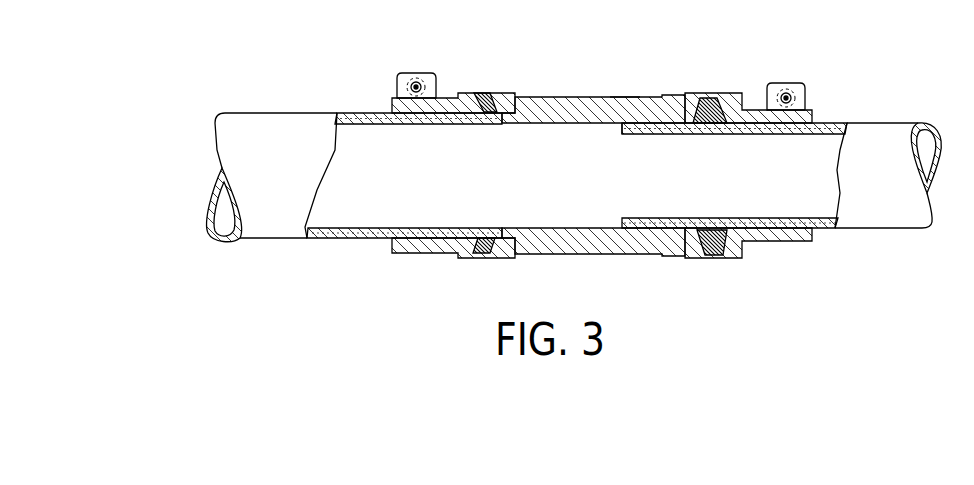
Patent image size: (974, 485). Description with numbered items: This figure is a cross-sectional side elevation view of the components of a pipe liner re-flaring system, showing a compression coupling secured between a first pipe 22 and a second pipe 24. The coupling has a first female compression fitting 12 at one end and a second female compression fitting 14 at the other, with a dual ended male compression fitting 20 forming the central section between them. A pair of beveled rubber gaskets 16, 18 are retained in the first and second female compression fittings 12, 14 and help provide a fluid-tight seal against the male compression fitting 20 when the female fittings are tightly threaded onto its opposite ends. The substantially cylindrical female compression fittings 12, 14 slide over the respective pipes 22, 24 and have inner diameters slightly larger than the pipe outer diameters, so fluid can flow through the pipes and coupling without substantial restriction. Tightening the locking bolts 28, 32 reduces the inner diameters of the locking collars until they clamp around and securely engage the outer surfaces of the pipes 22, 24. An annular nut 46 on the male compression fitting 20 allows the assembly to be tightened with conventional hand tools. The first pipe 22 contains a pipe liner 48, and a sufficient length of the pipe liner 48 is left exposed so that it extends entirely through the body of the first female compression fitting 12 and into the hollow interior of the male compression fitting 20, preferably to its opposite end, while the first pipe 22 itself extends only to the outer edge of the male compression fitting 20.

The first female compression fitting 12 is at (427, 255).
The second female compression fitting 14 is at (764, 242).
The beveled rubber gasket 16 is at (483, 97).
The beveled rubber gasket 18 is at (708, 105).
The dual ended male compression fitting 20 is at (557, 97).
The first pipe 22 is at (275, 228).
The second pipe 24 is at (878, 123).
The locking bolt 28 is at (415, 84).
The locking bolt 32 is at (787, 97).
The annular nut 46 is at (620, 97).
The pipe liner 48 is at (617, 123).